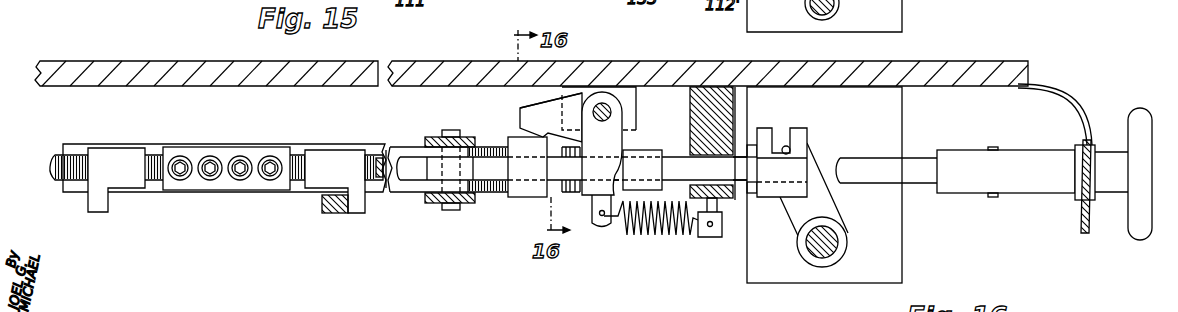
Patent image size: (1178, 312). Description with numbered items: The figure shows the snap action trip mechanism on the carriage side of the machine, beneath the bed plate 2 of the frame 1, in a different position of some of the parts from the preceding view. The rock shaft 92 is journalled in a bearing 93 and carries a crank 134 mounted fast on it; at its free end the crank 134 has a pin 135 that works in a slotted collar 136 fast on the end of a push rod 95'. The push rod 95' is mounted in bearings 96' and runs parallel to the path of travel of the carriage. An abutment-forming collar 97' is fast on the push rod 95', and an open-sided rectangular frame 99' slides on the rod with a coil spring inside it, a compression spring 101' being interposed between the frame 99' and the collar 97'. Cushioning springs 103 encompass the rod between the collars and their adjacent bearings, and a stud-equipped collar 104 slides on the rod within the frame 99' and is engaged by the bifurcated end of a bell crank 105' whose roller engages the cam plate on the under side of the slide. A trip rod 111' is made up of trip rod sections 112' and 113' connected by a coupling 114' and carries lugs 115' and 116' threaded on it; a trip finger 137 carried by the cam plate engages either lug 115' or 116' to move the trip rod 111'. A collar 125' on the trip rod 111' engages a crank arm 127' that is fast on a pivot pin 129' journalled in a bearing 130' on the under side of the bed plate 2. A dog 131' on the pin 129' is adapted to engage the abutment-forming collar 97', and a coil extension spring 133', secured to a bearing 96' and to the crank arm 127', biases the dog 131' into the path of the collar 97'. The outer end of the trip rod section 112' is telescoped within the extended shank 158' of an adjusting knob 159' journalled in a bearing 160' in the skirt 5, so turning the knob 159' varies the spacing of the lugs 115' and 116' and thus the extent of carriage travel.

The frame 1 is at (968, 60).
The bed plate 2 is at (158, 70).
The skirt 5 is at (1078, 116).
The rock shaft 92 is at (822, 256).
The bearing 93 is at (890, 15).
The push rod 95' is at (721, 226).
The bearings 96' is at (721, 115).
The abutment-forming collar 97' is at (529, 117).
The open-sided rectangular frame 99' is at (377, 145).
The compression spring 101' is at (498, 205).
The cushioning springs 103 is at (575, 197).
The stud-equipped collar 104 is at (453, 210).
The bell crank 105' is at (435, 178).
The trip rod 111' is at (579, 225).
The trip rod section 112' is at (648, 194).
The trip rod section 113' is at (56, 146).
The coupling 114' is at (226, 150).
The lug 115' is at (330, 161).
The lug 116' is at (116, 162).
The collar 125' is at (650, 155).
The crank arm 127' is at (605, 196).
The pivot pin 129' is at (613, 75).
The bearing 130' is at (621, 108).
The dog 131' is at (523, 102).
The coil extension spring 133' is at (663, 230).
The crank 134 is at (822, 207).
The pin 135 is at (786, 146).
The slotted collar 136 is at (800, 146).
The trip finger 137 is at (320, 205).
The extended shank 158' is at (1006, 155).
The adjusting knob 159' is at (1123, 145).
The bearing 160' is at (1089, 212).